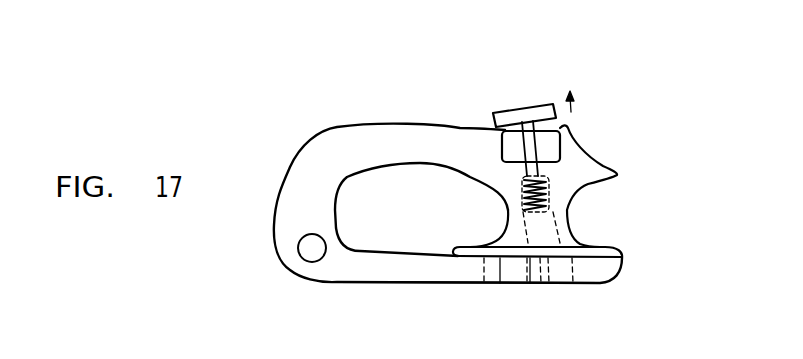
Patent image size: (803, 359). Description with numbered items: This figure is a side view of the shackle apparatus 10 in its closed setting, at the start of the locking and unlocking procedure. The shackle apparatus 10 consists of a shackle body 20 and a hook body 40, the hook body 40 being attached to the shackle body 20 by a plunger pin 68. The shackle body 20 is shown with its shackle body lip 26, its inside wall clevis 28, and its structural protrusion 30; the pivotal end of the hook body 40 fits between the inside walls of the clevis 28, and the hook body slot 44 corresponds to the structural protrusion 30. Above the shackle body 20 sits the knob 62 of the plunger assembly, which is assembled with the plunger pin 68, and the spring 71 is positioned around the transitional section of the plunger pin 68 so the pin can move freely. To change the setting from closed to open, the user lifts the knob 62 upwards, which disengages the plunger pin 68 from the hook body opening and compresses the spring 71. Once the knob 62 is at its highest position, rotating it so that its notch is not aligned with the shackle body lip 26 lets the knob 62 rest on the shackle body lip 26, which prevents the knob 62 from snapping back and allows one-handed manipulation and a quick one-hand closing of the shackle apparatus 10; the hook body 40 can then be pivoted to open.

The shackle apparatus 10 is at (450, 179).
The shackle body 20 is at (387, 147).
The shackle body lip 26 is at (466, 128).
The inside wall clevis 28 is at (521, 308).
The structural protrusion 30 is at (500, 270).
The hook body 40 is at (382, 268).
The hook body slot 44 is at (530, 268).
The knob 62 is at (539, 107).
The plunger pin 68 is at (575, 286).
The spring 71 is at (550, 205).